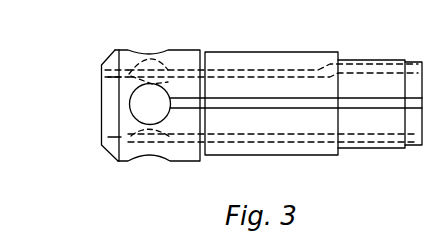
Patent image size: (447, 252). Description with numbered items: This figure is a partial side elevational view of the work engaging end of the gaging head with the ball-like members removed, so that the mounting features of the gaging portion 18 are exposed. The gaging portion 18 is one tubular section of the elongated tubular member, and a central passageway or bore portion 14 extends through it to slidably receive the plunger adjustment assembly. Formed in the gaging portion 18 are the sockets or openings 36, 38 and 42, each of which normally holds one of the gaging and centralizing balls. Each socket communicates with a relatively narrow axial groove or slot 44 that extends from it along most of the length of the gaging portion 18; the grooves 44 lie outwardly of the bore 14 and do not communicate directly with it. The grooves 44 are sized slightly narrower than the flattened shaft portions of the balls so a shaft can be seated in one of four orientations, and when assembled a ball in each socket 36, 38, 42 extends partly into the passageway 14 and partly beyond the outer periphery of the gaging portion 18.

The bore portion 14 is at (368, 72).
The gaging portion 18 is at (108, 187).
The socket 36 is at (140, 72).
The socket 38 is at (130, 132).
The socket 42 is at (140, 102).
The axial groove 44 is at (238, 104).